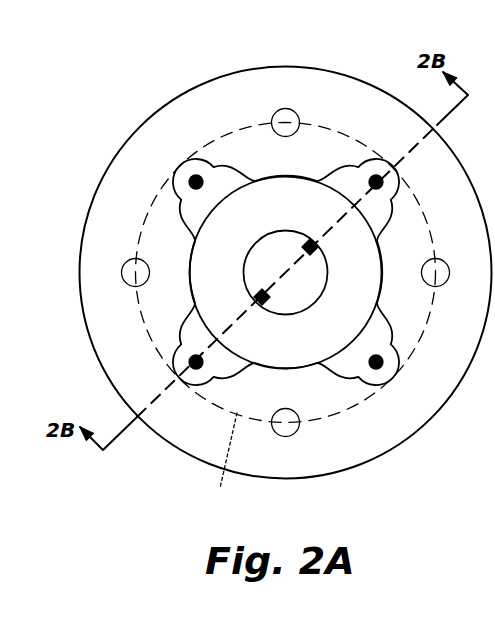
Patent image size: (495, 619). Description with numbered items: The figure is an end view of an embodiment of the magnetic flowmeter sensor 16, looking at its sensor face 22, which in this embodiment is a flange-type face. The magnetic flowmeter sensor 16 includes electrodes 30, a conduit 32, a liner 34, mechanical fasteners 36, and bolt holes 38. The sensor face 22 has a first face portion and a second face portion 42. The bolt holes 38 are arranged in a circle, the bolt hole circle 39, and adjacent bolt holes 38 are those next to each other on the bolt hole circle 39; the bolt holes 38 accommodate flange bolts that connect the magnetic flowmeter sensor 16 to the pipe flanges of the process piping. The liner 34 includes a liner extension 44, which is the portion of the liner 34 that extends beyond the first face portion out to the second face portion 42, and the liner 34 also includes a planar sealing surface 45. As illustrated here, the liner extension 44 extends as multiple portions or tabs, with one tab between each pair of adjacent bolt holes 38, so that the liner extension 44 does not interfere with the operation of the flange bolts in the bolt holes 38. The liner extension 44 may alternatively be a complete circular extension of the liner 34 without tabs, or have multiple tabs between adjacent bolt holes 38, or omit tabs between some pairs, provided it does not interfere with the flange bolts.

The magnetic flowmeter sensor 16 is at (348, 69).
The sensor face 22 is at (338, 393).
The electrodes 30 is at (305, 245).
The conduit 32 is at (312, 302).
The liner 34 is at (178, 290).
The mechanical fasteners 36 is at (193, 175).
The bolt holes 38 is at (286, 108).
The bolt hole circle 39 is at (221, 463).
The second face portion 42 is at (226, 150).
The liner extension 44 is at (177, 210).
The planar sealing surface 45 is at (249, 202).